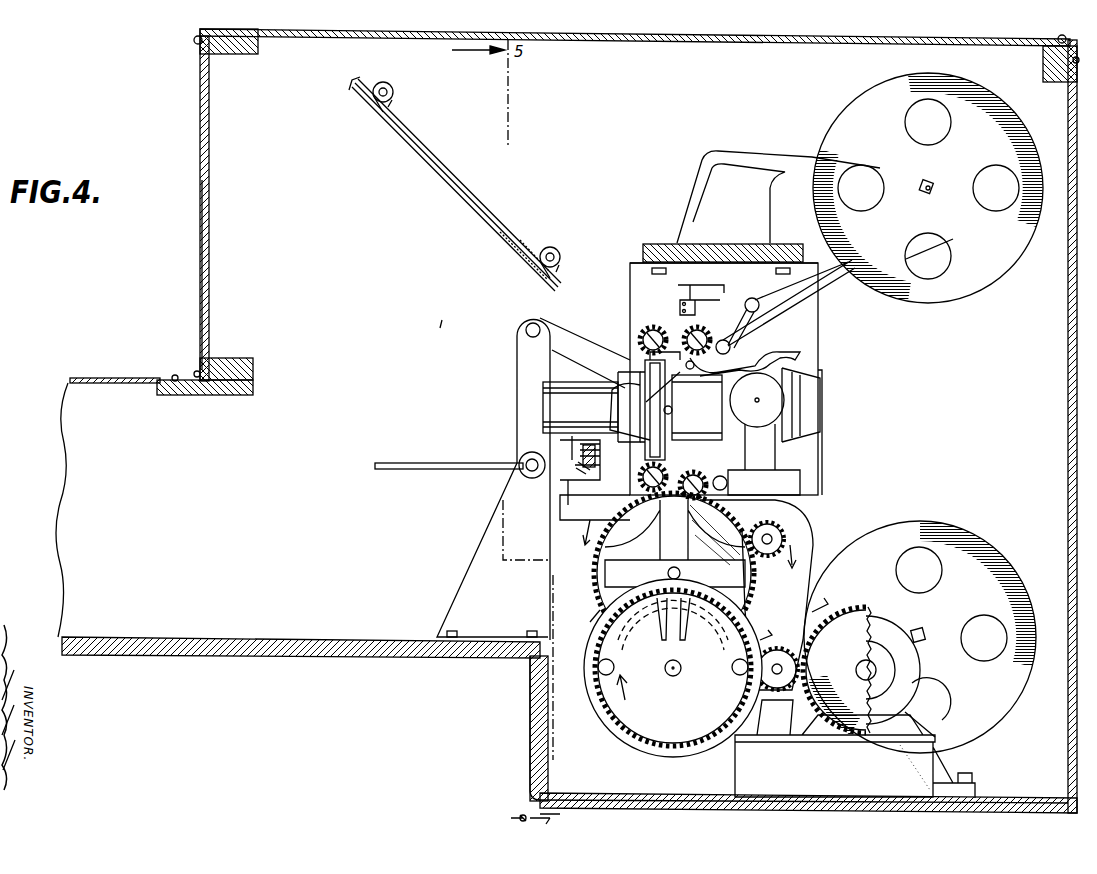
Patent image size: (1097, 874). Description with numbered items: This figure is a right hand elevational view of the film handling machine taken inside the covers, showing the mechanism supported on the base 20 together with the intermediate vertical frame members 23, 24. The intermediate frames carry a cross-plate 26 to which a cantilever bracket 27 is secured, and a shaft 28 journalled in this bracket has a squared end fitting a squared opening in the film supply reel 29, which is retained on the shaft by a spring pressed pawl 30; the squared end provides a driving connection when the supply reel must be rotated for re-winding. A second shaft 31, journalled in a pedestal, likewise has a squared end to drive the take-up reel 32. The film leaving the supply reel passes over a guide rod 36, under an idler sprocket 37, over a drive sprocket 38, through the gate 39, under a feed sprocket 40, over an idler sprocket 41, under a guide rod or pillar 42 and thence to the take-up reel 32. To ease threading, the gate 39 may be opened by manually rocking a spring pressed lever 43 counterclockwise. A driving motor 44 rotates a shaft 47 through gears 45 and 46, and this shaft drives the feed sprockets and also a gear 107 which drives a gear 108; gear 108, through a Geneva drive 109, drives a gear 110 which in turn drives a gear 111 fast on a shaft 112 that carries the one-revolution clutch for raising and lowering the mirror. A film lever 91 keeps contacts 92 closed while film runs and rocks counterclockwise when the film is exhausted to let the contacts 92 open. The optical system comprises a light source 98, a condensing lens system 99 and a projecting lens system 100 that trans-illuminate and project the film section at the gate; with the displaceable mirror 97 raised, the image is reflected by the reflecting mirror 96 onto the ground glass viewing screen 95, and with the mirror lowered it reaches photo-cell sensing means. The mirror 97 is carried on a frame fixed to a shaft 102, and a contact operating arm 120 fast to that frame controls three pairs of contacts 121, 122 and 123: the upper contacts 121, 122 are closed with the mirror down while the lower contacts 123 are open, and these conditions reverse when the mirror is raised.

The base 20 is at (535, 722).
The intermediate vertical frame member 23 is at (810, 325).
The intermediate vertical frame member 24 is at (795, 512).
The cross-plate 26 is at (660, 250).
The cantilever bracket 27 is at (722, 184).
The shaft 28 is at (931, 193).
The film supply reel 29 is at (928, 188).
The spring pressed pawl 30 is at (931, 180).
The shaft 31 is at (925, 632).
The take-up reel 32 is at (920, 625).
The guide rod 36 is at (731, 348).
The idler sprocket 37 is at (700, 333).
The drive sprocket 38 is at (652, 326).
The gate 39 is at (632, 385).
The feed sprocket 40 is at (660, 470).
The idler sprocket 41 is at (696, 478).
The guide rod or pillar 42 is at (720, 476).
The spring pressed lever 43 is at (790, 372).
The driving motor 44 is at (912, 668).
The gear 45 is at (853, 610).
The gear 46 is at (777, 650).
The shaft 47 is at (800, 670).
The film lever 91 is at (758, 312).
The contacts 92 is at (725, 295).
The ground glass viewing screen 95 is at (210, 215).
The reflecting mirror 96 is at (413, 157).
The displaceable mirror 97 is at (430, 463).
The light source 98 is at (766, 402).
The condensing lens system 99 is at (697, 407).
The projecting lens system 100 is at (591, 407).
The shaft 102 is at (521, 461).
The gear 107 is at (740, 676).
The gear 108 is at (614, 722).
The Geneva drive 109 is at (592, 635).
The gear 110 is at (745, 585).
The gear 111 is at (778, 560).
The shaft 112 is at (780, 536).
The contact operating arm 120 is at (533, 479).
The contacts 121 is at (568, 440).
The contacts 122 is at (578, 470).
The contacts 123 is at (568, 484).